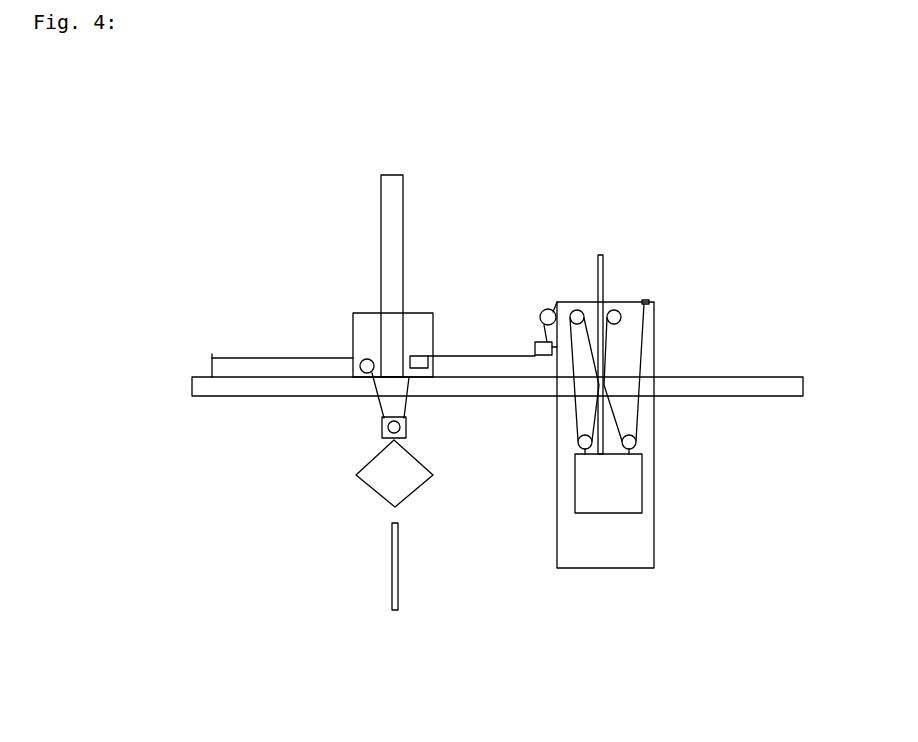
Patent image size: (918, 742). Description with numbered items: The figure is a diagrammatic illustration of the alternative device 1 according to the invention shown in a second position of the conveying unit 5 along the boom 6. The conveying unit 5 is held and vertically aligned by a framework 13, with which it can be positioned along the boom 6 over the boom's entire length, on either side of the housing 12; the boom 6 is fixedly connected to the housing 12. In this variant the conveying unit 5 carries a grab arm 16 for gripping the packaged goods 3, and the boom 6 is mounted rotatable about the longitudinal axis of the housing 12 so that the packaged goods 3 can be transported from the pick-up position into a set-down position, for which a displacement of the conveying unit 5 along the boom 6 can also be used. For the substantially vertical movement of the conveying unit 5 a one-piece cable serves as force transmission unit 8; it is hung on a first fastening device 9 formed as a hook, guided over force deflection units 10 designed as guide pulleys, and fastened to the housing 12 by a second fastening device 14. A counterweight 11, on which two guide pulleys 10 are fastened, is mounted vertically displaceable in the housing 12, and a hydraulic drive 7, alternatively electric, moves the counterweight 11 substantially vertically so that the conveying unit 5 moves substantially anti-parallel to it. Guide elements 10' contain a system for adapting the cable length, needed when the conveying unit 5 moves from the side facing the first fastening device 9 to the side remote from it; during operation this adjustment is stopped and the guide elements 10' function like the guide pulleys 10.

The device 1 is at (478, 170).
The packaged goods 3 is at (392, 553).
The conveying unit 5 is at (382, 239).
The boom 6 is at (255, 397).
The hydraulic drive 7 is at (603, 270).
The force transmission unit 8 is at (260, 358).
The first fastening device 9 is at (210, 365).
The force deflection units 10 is at (458, 330).
The guide elements 10' is at (511, 340).
The counterweight 11 is at (642, 484).
The housing 12 is at (654, 320).
The framework 13 is at (353, 337).
The second fastening device 14 is at (647, 300).
The grab arm 16 is at (373, 457).